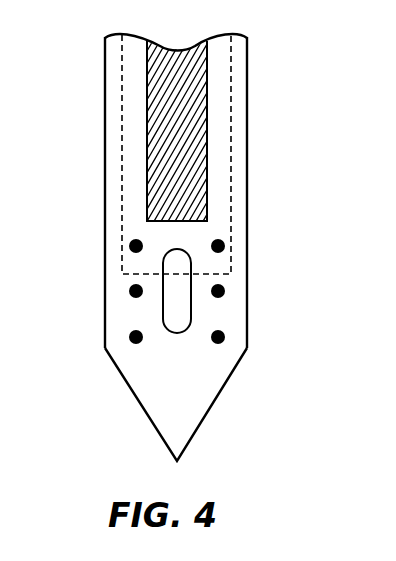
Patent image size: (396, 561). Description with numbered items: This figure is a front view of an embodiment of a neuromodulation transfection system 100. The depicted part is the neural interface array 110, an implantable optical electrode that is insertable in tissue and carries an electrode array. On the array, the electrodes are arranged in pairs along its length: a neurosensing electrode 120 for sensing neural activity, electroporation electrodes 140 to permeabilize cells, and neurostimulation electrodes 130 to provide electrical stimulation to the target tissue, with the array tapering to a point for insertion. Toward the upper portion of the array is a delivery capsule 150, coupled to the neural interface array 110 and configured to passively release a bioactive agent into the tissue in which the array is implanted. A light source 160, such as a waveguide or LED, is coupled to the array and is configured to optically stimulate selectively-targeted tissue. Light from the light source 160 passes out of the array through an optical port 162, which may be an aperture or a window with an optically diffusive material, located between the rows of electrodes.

The neuromodulation transfection system 100 is at (233, 423).
The neural interface array 110 is at (130, 389).
The neurosensing electrode 120 is at (131, 247).
The neurostimulation electrodes 130 is at (131, 337).
The electroporation electrodes 140 is at (131, 291).
The delivery capsule 150 is at (167, 117).
The light source 160 is at (232, 123).
The optical port 162 is at (178, 333).